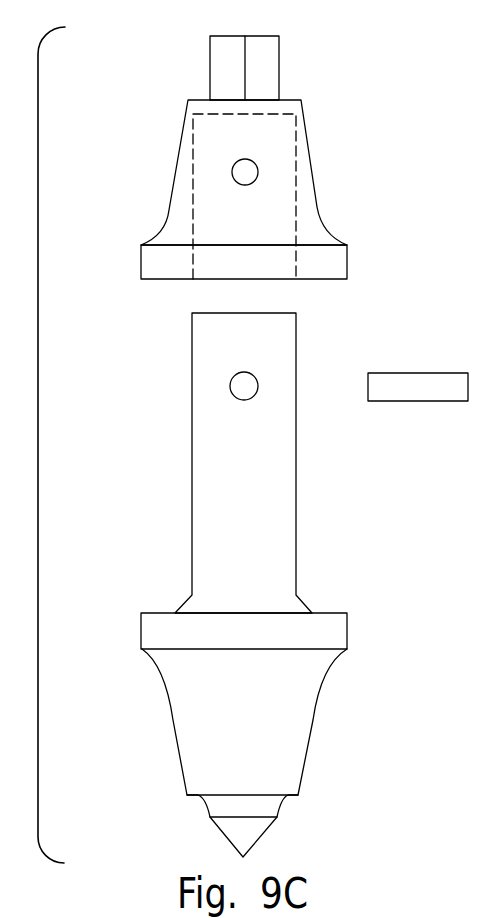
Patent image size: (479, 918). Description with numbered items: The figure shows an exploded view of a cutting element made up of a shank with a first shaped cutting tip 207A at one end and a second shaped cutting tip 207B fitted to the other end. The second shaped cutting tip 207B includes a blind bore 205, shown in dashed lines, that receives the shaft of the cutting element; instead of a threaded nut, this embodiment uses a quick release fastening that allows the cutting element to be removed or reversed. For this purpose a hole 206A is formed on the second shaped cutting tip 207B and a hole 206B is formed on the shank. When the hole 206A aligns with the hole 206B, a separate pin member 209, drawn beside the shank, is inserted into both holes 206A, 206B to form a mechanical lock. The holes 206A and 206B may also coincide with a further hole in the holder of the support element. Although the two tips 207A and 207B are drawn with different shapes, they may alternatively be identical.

The blind bore 205 is at (193, 214).
The hole 206A is at (233, 167).
The hole 206B is at (230, 386).
The first shaped cutting tip 207A is at (265, 833).
The second shaped cutting tip 207B is at (279, 58).
The pin member 209 is at (410, 401).